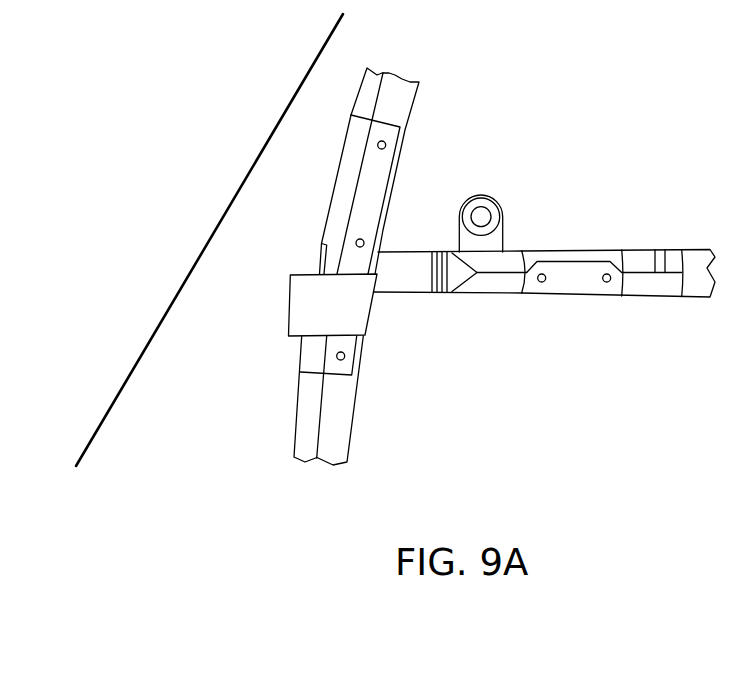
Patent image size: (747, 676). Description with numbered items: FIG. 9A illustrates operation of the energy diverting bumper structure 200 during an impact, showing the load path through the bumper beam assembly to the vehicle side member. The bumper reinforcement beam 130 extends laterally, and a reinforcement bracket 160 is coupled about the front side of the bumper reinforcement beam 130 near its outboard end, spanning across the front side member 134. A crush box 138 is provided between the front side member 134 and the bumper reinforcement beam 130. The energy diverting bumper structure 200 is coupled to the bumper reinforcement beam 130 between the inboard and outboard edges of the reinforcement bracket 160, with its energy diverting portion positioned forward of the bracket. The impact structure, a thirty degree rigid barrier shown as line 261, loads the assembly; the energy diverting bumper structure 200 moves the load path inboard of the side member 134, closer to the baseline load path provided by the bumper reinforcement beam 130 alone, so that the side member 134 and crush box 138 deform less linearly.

The wall surface 261 is at (262, 150).
The bumper reinforcement beam 130 is at (303, 427).
The reinforcement bracket 160 is at (380, 163).
The energy diverting bumper structure 200 is at (288, 290).
The crush box 138 is at (410, 287).
The front side member 134 is at (578, 261).